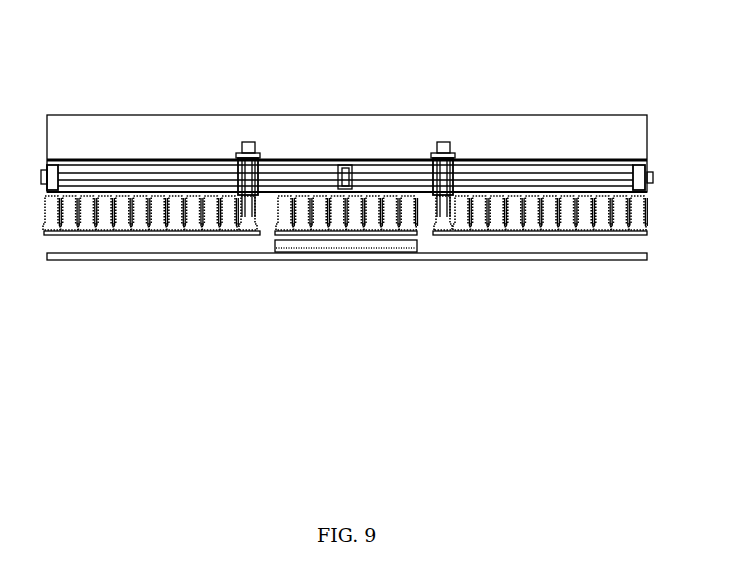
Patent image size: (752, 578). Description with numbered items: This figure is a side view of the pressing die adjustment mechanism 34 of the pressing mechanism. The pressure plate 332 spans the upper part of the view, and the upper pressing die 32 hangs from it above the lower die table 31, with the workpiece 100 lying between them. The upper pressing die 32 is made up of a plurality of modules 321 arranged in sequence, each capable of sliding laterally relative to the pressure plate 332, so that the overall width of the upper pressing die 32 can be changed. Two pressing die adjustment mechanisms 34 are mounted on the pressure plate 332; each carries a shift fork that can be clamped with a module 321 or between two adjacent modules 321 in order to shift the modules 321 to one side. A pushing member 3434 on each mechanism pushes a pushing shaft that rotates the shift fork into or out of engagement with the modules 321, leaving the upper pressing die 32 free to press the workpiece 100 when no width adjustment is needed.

The workpiece 100 is at (313, 247).
The lower die table 31 is at (438, 255).
The upper pressing die 32 is at (345, 306).
The modules 321 is at (140, 218).
The pressure plate 332 is at (393, 138).
The pressing die adjustment mechanism 34 is at (373, 130).
The pushing member 3434 is at (249, 143).